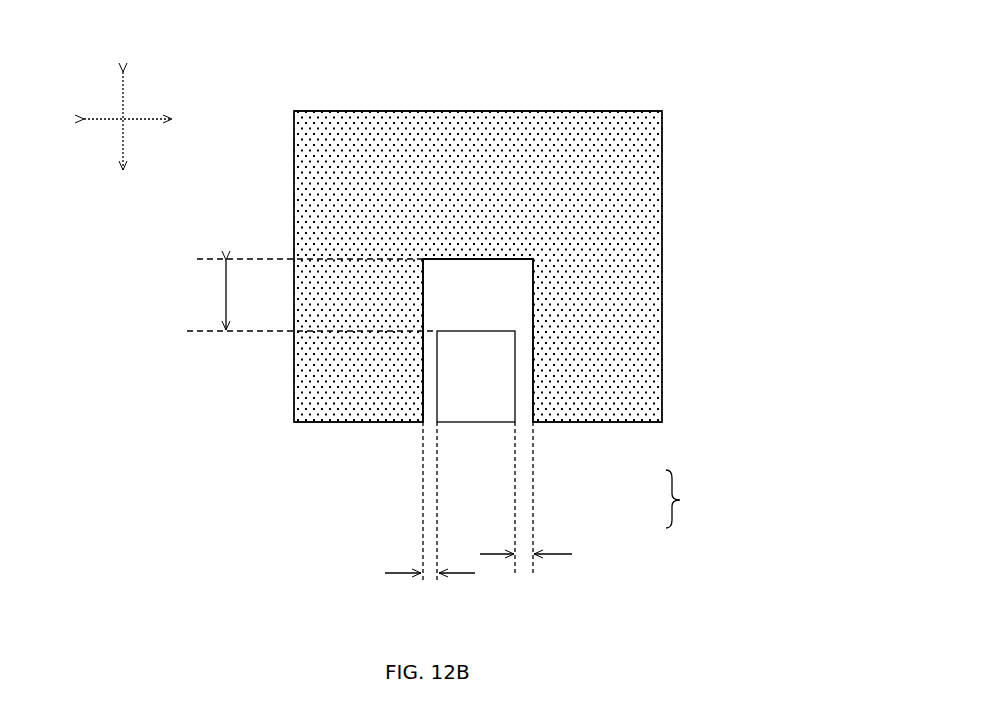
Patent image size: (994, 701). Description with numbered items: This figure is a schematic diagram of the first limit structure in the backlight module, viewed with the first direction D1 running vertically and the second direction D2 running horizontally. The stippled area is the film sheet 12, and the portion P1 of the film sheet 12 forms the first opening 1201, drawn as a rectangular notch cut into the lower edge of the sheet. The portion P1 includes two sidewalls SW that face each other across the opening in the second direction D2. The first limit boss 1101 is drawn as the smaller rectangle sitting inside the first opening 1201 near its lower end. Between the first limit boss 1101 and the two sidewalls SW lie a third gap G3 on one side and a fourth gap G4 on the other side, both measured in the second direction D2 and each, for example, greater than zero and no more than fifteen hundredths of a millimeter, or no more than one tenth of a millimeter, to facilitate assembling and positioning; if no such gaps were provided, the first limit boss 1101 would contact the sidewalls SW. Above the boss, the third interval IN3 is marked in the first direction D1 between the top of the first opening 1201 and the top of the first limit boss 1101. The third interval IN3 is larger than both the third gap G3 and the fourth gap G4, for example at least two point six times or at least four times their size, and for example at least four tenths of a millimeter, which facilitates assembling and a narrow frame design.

The film sheet 12 is at (525, 266).
The portion of the film sheet P1 is at (486, 281).
The first opening 1201 is at (541, 374).
The first limit boss 1101 is at (547, 434).
The sidewalls SW is at (344, 374).
The third interval IN3 is at (201, 295).
The third gap G3 is at (428, 560).
The fourth gap G4 is at (526, 568).
The first direction D1 is at (122, 101).
The second direction D2 is at (144, 120).